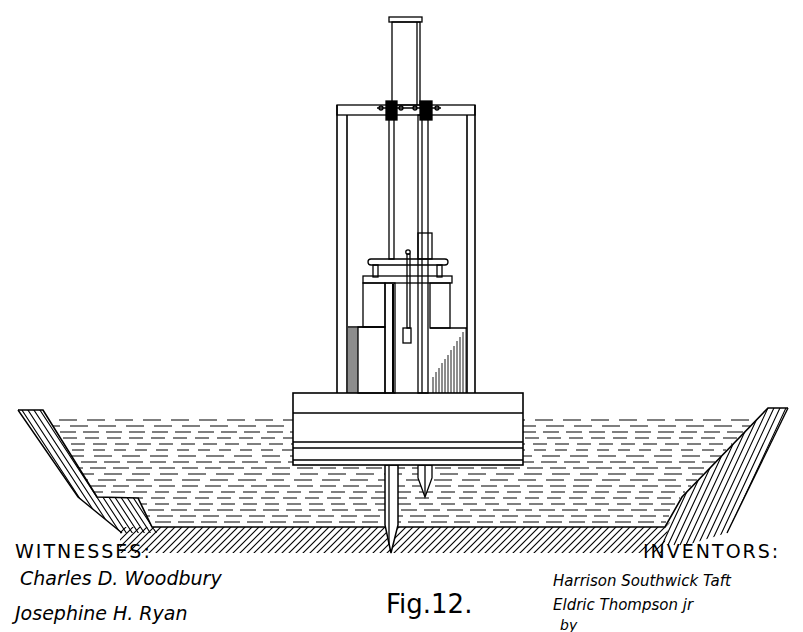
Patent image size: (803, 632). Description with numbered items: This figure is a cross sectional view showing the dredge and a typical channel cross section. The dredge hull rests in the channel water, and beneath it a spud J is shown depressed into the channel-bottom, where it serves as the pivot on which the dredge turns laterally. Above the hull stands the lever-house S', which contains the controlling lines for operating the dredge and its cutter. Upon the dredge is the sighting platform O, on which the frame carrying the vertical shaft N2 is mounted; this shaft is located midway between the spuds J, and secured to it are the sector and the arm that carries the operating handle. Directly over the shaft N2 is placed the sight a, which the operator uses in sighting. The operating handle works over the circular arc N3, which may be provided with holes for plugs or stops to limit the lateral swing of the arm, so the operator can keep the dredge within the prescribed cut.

The sight a is at (408, 250).
The circular arc N3 is at (320, 275).
The sighting platform O is at (365, 281).
The spud J is at (387, 303).
The vertical shaft N2 is at (325, 342).
The lever-house S' is at (408, 429).